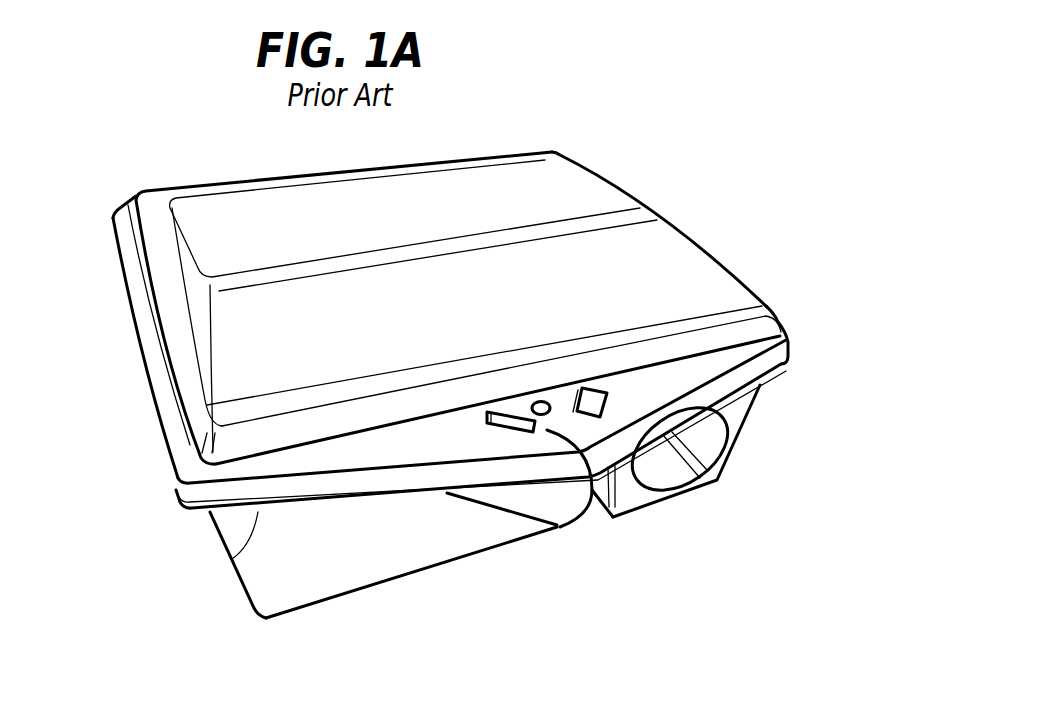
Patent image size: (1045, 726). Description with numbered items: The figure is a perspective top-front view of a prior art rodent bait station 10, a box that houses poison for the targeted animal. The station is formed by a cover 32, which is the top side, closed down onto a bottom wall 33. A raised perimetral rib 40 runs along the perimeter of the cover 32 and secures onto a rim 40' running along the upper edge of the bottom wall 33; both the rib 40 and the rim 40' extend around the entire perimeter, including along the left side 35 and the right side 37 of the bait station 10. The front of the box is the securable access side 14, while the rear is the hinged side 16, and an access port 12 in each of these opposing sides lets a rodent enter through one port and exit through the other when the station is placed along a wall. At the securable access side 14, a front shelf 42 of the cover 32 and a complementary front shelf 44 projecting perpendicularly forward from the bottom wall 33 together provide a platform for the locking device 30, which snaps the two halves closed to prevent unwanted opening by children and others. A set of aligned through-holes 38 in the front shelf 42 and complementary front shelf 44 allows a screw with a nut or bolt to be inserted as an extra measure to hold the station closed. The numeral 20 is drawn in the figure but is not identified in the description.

The bait station 10 is at (672, 66).
The access port 12 is at (747, 407).
The securable access side 14 is at (253, 608).
The hinged side 16 is at (151, 191).
The bottom edge 20 is at (298, 614).
The locking device 30 is at (598, 478).
The cover 32 is at (220, 300).
The bottom wall 33 is at (745, 449).
The left side 35 is at (103, 282).
The right side 37 is at (660, 186).
The through-holes 38 is at (541, 416).
The raised perimetral rib 40 is at (459, 366).
The rim 40' is at (197, 551).
The front shelf 42 is at (623, 403).
The complementary front shelf 44 is at (413, 497).